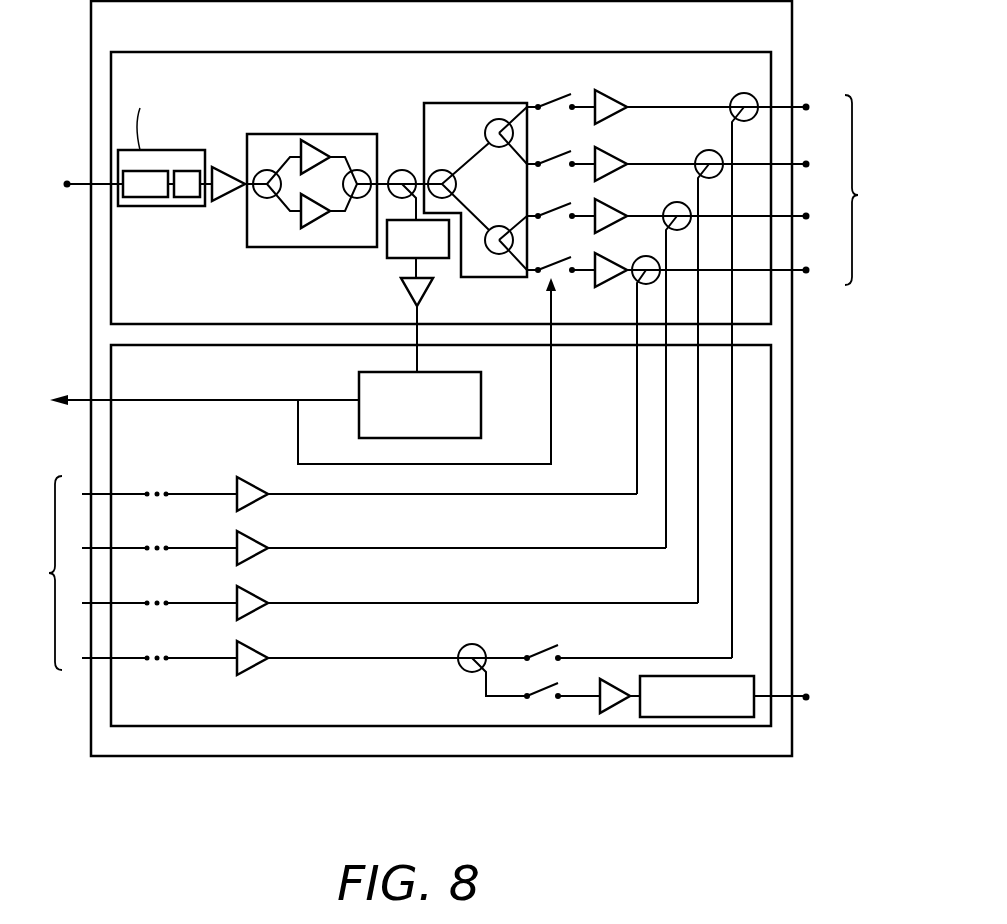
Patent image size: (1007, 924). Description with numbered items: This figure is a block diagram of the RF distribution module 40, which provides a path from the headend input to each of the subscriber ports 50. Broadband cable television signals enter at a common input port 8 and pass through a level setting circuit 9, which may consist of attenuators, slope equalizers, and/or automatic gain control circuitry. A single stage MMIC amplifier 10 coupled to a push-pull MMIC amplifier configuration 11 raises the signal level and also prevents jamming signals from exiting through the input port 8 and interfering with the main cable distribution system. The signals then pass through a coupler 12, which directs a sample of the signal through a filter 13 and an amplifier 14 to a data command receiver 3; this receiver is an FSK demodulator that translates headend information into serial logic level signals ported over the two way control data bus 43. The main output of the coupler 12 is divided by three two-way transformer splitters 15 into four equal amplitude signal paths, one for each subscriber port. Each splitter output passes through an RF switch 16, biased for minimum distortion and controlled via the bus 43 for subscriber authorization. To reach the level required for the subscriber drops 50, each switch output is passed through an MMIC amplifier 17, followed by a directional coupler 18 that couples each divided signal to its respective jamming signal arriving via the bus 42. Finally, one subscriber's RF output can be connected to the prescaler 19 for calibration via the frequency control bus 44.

The data command receiver 3 is at (359, 376).
The input port 8 is at (68, 190).
The level setting circuit 9 is at (200, 156).
The single stage MMIC amplifier 10 is at (212, 198).
The push-pull MMIC amplifier configuration 11 is at (337, 122).
The coupler 12 is at (410, 168).
The filter 13 is at (388, 258).
The amplifier 14 is at (424, 292).
The two-way transformer splitters 15 is at (449, 103).
The RF switch 16 is at (557, 94).
The MMIC amplifier 17 is at (609, 99).
The directional coupler 18 is at (742, 93).
The prescaler 19 is at (745, 717).
The RF distribution module 40 is at (863, 509).
The bus 42 is at (362, 575).
The two way control data bus 43 is at (80, 398).
The frequency control bus 44 is at (806, 700).
The subscriber ports 50 is at (842, 188).